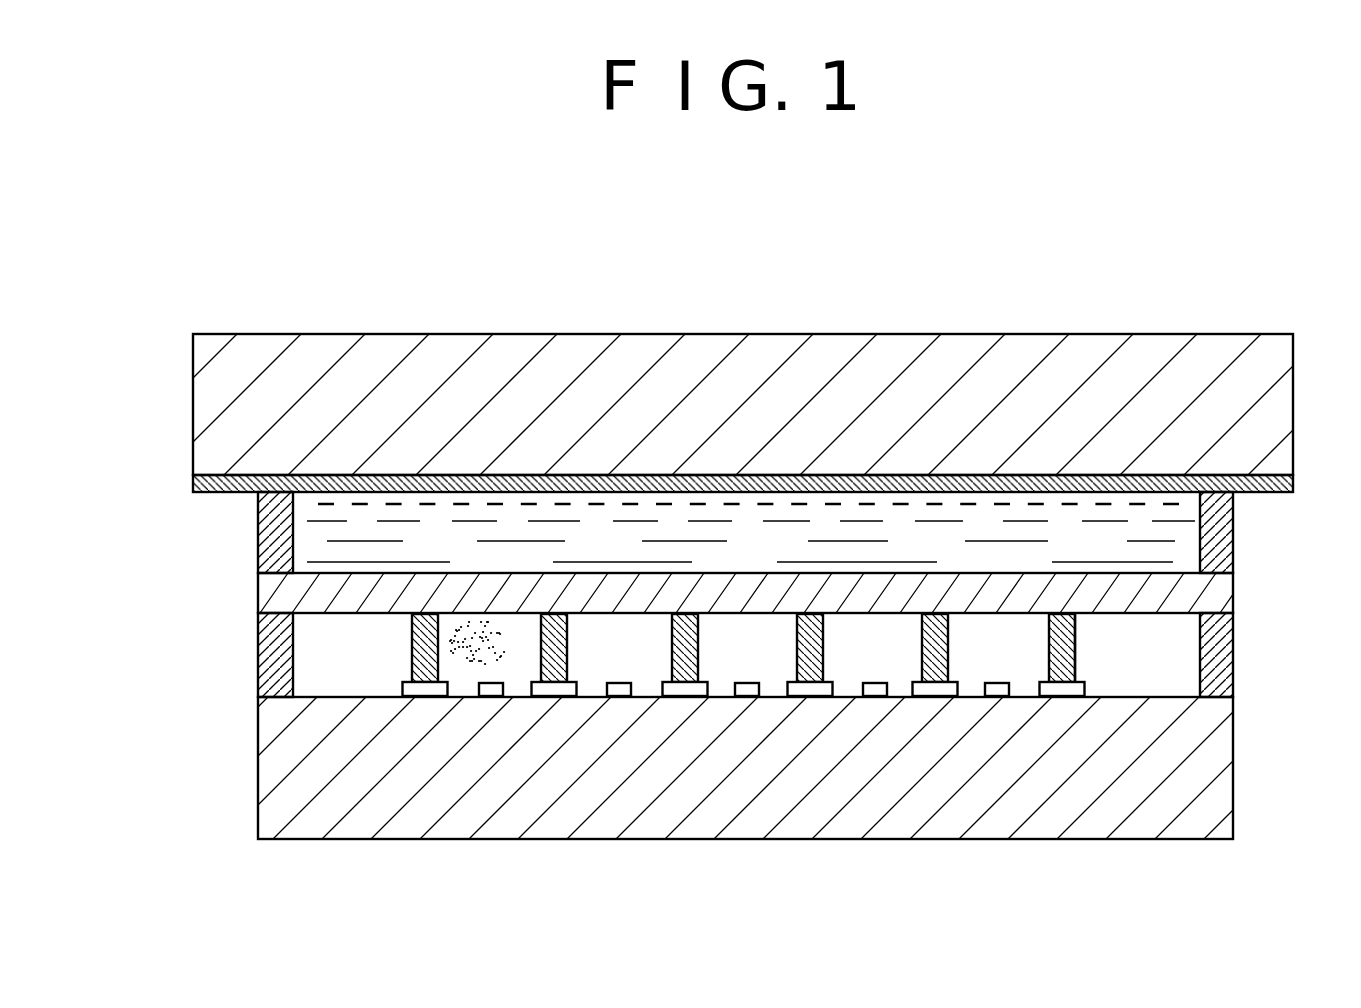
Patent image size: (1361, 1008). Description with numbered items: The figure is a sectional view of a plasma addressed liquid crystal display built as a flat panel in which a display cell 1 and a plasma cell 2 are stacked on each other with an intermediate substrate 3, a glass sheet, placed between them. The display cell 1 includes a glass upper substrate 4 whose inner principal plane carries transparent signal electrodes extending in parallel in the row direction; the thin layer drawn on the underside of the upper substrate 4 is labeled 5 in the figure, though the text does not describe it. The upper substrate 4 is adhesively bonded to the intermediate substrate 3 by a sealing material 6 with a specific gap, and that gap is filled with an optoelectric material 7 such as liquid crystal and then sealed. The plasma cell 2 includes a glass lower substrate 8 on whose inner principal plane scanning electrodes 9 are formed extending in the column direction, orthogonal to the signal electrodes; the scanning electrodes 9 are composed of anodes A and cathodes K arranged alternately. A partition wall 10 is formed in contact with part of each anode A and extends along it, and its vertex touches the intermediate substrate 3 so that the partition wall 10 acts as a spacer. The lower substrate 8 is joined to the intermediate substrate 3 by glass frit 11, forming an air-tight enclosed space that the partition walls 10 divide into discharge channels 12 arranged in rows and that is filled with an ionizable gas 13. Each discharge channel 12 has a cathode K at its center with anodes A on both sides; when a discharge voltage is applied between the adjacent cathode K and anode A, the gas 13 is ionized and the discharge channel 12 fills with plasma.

The display cell 1 is at (170, 334).
The plasma cell 2 is at (170, 605).
The intermediate substrate 3 is at (1218, 597).
The upper substrate 4 is at (620, 366).
The thin film layer 5 is at (1295, 483).
The sealing material 6 is at (1217, 562).
The optoelectric material 7 is at (1172, 530).
The lower substrate 8 is at (322, 808).
The scanning electrodes 9 is at (1042, 682).
The partition wall 10 is at (1077, 650).
The glass frit 11 is at (1218, 668).
The discharge channel 12 is at (729, 645).
The ionizable gas 13 is at (479, 655).